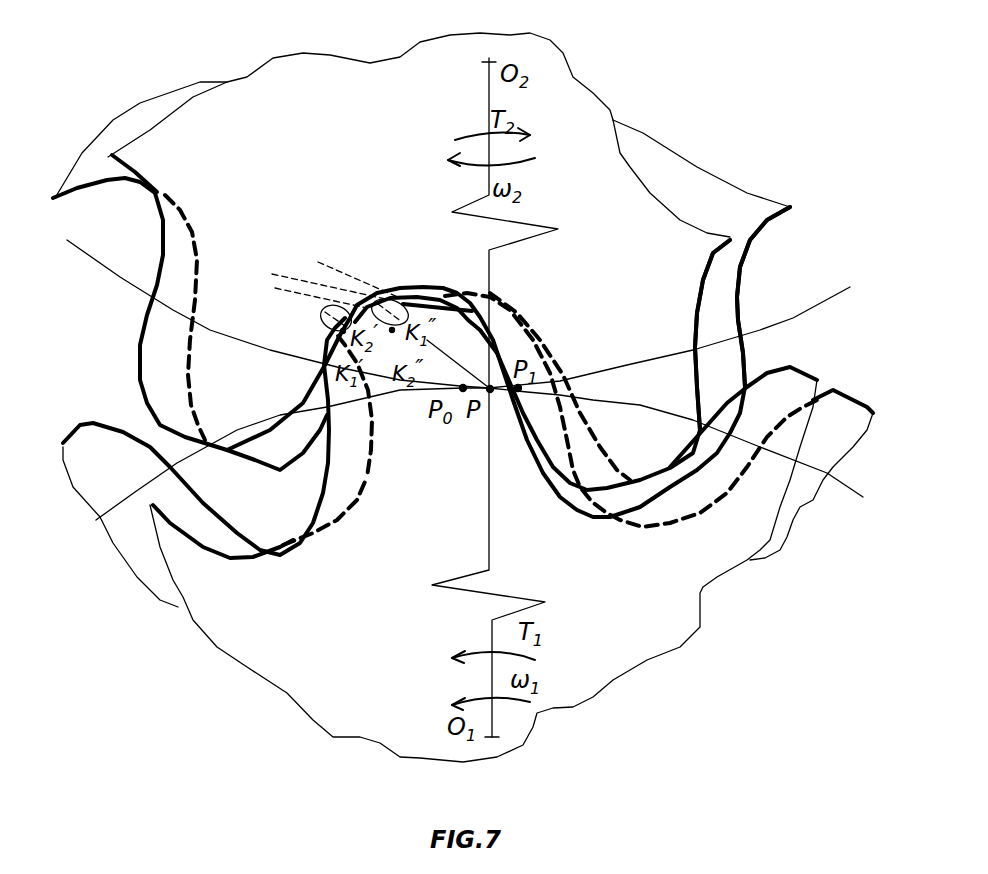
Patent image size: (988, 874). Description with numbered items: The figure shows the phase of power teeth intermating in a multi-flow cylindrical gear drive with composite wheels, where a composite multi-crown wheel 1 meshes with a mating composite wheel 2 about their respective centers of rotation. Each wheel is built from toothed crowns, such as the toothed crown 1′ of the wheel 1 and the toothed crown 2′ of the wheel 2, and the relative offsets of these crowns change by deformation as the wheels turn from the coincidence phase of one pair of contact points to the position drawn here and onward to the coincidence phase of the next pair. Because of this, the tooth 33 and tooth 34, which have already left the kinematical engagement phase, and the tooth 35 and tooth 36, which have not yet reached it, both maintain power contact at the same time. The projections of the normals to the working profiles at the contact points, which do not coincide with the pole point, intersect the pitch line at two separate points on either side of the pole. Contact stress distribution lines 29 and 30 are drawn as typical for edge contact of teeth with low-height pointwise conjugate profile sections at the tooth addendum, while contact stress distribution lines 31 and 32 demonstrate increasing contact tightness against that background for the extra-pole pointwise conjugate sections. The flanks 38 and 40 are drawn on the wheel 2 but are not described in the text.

The wheel 1 is at (642, 632).
The toothed crown 1′ is at (187, 565).
The wheel 2 is at (585, 152).
The toothed crown 2′ is at (147, 155).
The distribution line 29 is at (337, 277).
The distribution line 30 is at (277, 277).
The contact stress distribution line 31 is at (320, 322).
The contact stress distribution line 32 is at (394, 298).
The tooth 33 is at (307, 527).
The tooth 34 is at (140, 335).
The tooth 35 is at (372, 462).
The tooth 36 is at (312, 458).
The tooth flank 38 is at (697, 300).
The tooth flank 40 is at (740, 317).